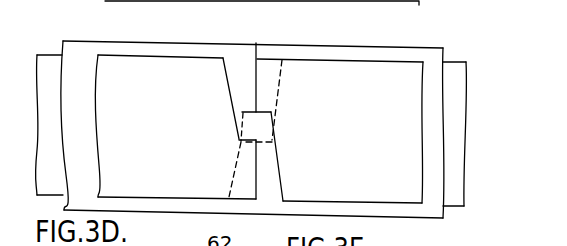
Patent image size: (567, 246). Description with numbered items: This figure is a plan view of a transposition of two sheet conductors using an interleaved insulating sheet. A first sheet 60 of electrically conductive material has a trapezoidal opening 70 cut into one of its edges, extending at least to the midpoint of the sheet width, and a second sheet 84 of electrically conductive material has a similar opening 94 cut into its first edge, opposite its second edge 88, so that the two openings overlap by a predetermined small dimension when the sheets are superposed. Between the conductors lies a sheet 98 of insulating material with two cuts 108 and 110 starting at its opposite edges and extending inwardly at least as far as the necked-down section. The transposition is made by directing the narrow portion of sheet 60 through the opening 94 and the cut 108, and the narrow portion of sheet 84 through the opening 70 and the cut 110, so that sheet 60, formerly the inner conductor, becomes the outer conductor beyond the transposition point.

The sheet of electrically conductive material 60 is at (47, 62).
The opening 70 is at (278, 186).
The sheet of electrically conductive material 84 is at (130, 68).
The second edge 88 is at (349, 2).
The opening 94 is at (233, 85).
The sheet of insulating material 98 is at (75, 52).
The cut 108 is at (257, 90).
The cut 110 is at (256, 162).